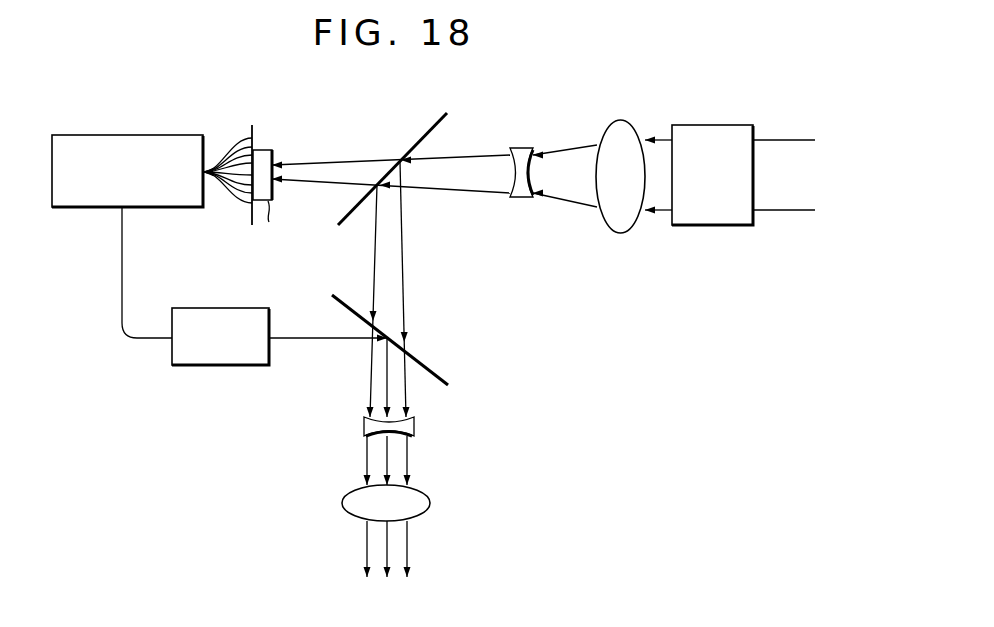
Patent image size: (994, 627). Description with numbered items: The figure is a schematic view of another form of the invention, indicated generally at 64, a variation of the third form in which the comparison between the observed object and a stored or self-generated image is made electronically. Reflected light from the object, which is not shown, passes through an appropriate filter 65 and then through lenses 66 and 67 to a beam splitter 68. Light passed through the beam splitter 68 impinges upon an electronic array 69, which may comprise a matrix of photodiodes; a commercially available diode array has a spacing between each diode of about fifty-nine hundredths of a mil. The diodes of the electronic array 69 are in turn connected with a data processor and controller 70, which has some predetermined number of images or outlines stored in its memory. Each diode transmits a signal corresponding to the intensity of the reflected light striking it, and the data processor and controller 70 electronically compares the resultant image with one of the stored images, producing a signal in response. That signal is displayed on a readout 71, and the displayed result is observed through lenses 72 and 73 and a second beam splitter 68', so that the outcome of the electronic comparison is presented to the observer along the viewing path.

The form of the invention 64 is at (338, 126).
The filter 65 is at (700, 125).
The lens 66 is at (600, 140).
The lens 67 is at (520, 147).
The beam splitter 68 is at (392, 160).
The beam splitter 68' is at (399, 340).
The electronic array 69 is at (266, 149).
The data processor and controller 70 is at (183, 134).
The readout 71 is at (176, 307).
The lens 72 is at (414, 428).
The lens 73 is at (430, 498).